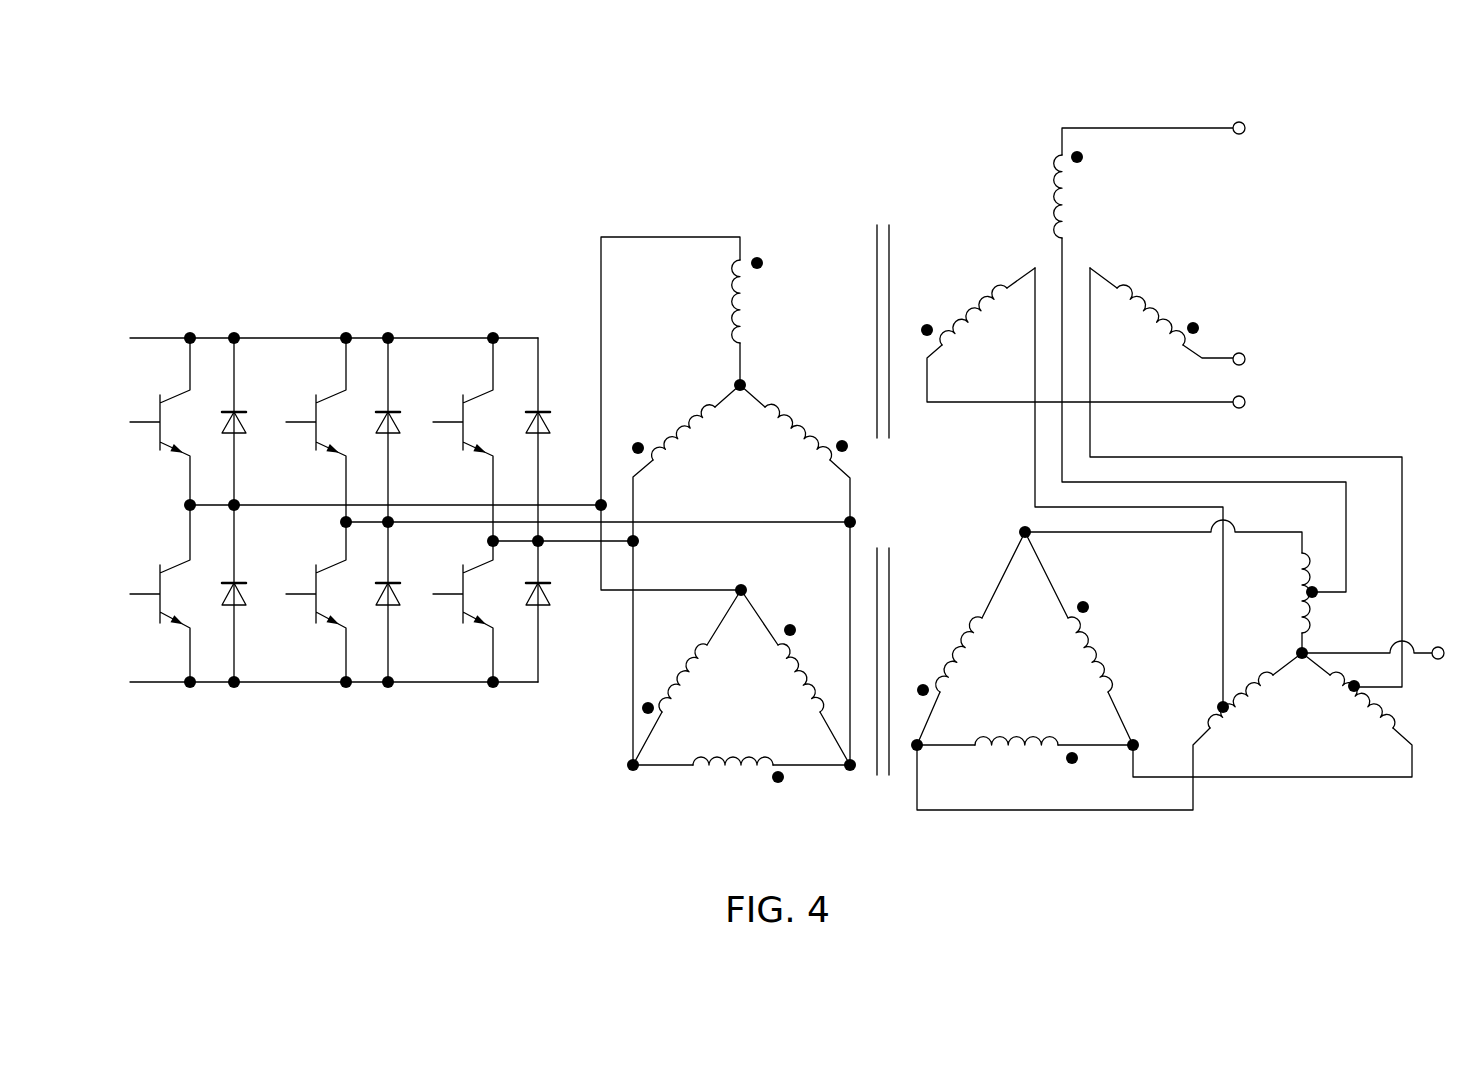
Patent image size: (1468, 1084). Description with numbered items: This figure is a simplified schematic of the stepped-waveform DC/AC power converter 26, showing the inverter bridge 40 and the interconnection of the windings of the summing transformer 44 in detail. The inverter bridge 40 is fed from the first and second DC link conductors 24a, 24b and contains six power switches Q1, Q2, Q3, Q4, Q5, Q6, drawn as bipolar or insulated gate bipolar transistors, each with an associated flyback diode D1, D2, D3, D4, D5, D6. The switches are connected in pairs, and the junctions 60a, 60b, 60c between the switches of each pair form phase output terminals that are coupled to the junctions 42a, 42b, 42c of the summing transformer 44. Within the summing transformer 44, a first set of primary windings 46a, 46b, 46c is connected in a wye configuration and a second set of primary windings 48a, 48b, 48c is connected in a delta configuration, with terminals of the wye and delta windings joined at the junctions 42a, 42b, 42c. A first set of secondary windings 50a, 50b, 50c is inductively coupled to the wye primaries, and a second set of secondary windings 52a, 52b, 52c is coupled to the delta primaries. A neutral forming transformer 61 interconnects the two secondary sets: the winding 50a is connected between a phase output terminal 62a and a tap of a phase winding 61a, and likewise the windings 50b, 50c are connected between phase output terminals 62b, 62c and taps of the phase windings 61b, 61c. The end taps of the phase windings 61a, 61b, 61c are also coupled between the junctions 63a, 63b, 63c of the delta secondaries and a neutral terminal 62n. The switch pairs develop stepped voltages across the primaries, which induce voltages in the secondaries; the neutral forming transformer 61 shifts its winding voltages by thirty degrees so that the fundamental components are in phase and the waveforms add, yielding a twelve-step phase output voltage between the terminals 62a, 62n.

The inverter bridge 40 is at (385, 262).
The first DC link conductor 24a is at (148, 337).
The second DC link conductor 24b is at (165, 686).
The stepped-waveform DC/AC power converter 26 is at (575, 712).
The power switch Q1 is at (183, 392).
The power switch Q2 is at (183, 560).
The power switch Q3 is at (340, 392).
The power switch Q4 is at (325, 622).
The power switch Q5 is at (487, 392).
The power switch Q6 is at (470, 622).
The flyback diode D1 is at (247, 425).
The flyback diode D2 is at (247, 597).
The flyback diode D3 is at (403, 423).
The flyback diode D4 is at (403, 597).
The flyback diode D5 is at (550, 425).
The flyback diode D6 is at (550, 597).
The junction 60a is at (185, 506).
The junction 60b is at (343, 525).
The junction 60c is at (491, 542).
The junction 42a is at (598, 505).
The junction 42b is at (853, 520).
The junction 42c is at (636, 541).
The summing transformer 44 is at (800, 224).
The primary winding 46a is at (742, 305).
The primary winding 46b is at (690, 420).
The primary winding 46c is at (790, 420).
The primary winding 48a is at (795, 668).
The primary winding 48b is at (683, 668).
The primary winding 48c is at (735, 770).
The secondary winding 50a is at (1058, 188).
The secondary winding 50b is at (980, 300).
The secondary winding 50c is at (1143, 300).
The secondary winding 52a is at (1105, 668).
The secondary winding 52b is at (955, 655).
The secondary winding 52c is at (1010, 745).
The neutral forming transformer 61 is at (1335, 802).
The phase winding 61a is at (1306, 632).
The phase winding 61b is at (1208, 727).
The phase winding 61c is at (1393, 728).
The phase output terminal 62a is at (1247, 125).
The phase output terminal 62b is at (1246, 406).
The phase output terminal 62c is at (1245, 355).
The neutral terminal 62n is at (1442, 647).
The junction 63a is at (1022, 530).
The junction 63b is at (917, 748).
The junction 63c is at (1133, 748).